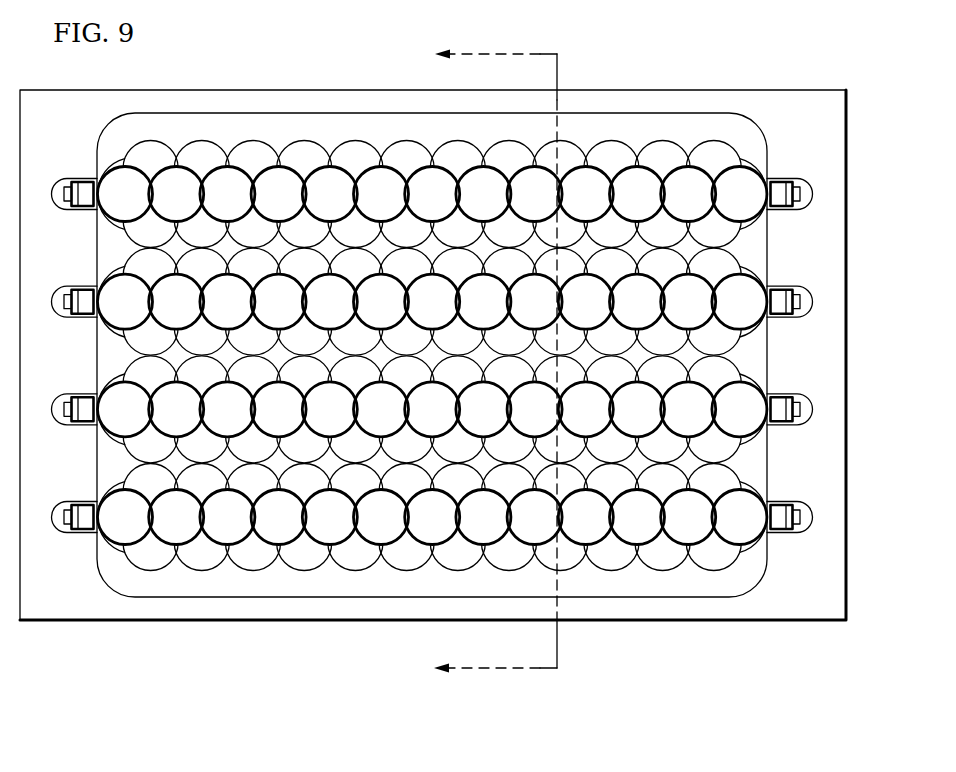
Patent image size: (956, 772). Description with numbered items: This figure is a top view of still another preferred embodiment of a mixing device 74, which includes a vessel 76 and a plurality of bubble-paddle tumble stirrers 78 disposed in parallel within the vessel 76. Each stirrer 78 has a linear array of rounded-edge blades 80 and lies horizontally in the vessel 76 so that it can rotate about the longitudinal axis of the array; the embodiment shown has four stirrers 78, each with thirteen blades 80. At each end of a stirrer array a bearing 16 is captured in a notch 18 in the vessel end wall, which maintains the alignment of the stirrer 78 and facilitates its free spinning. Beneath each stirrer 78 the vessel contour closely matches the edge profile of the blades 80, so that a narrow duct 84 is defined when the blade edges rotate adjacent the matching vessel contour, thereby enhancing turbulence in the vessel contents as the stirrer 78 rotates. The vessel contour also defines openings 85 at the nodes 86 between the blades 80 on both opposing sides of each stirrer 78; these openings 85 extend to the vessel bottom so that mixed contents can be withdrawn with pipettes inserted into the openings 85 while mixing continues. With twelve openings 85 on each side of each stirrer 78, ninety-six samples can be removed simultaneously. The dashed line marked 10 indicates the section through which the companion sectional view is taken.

The mixing device 10 is at (477, 362).
The bearing 16 is at (782, 531).
The notch 18 is at (805, 530).
The mixing device 74 is at (843, 80).
The vessel 76 is at (172, 608).
The bubble-paddle tumble stirrer 78 is at (112, 432).
The rounded-edge blade 80 is at (273, 522).
The narrow duct 84 is at (118, 543).
The opening 85 is at (352, 555).
The node 86 is at (612, 534).